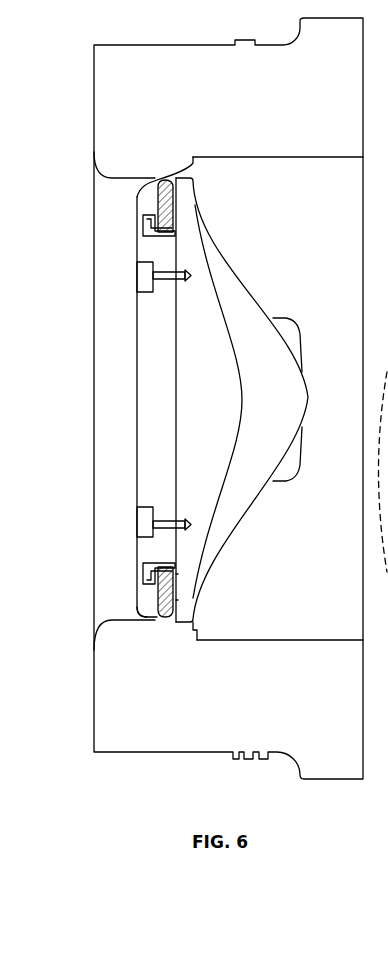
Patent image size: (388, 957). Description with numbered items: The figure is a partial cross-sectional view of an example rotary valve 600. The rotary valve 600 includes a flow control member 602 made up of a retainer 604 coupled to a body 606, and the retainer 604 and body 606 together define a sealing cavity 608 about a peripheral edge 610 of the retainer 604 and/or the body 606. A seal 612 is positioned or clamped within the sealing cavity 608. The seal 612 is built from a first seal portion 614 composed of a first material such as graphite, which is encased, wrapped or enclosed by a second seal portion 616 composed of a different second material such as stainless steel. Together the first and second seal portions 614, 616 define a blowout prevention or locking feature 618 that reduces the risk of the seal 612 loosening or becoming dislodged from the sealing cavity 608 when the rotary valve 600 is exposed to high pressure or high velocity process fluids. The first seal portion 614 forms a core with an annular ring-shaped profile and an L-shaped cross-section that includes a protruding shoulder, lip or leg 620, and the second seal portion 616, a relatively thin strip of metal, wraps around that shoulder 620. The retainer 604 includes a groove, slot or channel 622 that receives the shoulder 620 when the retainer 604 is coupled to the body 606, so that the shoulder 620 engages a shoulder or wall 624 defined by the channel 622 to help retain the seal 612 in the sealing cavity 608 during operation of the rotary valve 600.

The rotary valve 600 is at (143, 33).
The flow control member 602 is at (124, 407).
The retainer 604 is at (137, 338).
The body 606 is at (229, 514).
The sealing cavity 608 is at (167, 233).
The peripheral edge 610 is at (172, 622).
The seal 612 is at (178, 600).
The first seal portion 614 is at (178, 575).
The second seal portion 616 is at (163, 625).
The locking feature 618 is at (152, 251).
The shoulder 620 is at (146, 221).
The channel 622 is at (143, 564).
The wall 624 is at (158, 222).